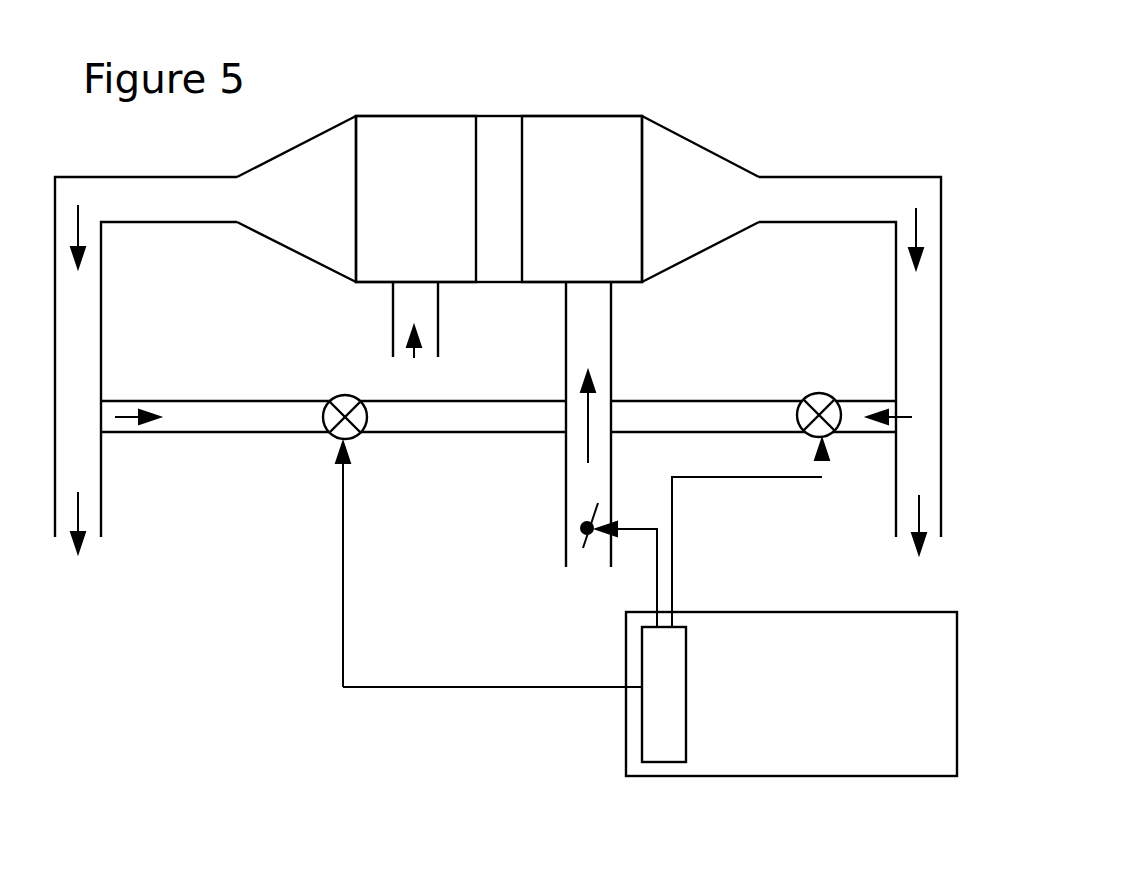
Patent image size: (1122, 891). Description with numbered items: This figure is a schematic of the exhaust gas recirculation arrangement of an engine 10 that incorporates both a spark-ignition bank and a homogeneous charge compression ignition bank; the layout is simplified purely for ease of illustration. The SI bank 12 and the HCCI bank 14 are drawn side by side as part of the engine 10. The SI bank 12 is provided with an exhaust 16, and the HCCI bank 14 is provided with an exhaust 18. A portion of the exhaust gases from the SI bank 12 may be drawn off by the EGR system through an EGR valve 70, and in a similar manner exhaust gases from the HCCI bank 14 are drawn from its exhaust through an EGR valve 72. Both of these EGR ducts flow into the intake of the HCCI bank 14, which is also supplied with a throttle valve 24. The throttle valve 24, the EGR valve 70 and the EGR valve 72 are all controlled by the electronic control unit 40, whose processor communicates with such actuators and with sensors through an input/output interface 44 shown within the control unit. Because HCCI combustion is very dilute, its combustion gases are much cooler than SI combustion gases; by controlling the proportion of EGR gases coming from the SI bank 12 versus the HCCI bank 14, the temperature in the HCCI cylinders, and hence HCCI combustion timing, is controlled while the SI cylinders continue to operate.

The engine 10 is at (384, 99).
The SI bank 12 is at (440, 197).
The HCCI bank 14 is at (593, 195).
The exhaust 16 is at (323, 210).
The exhaust 18 is at (713, 208).
The throttle valve 24 is at (582, 525).
The electronic control unit 40 is at (863, 704).
The input/output interface 44 is at (672, 762).
The EGR valve 70 is at (337, 397).
The EGR valve 72 is at (813, 387).